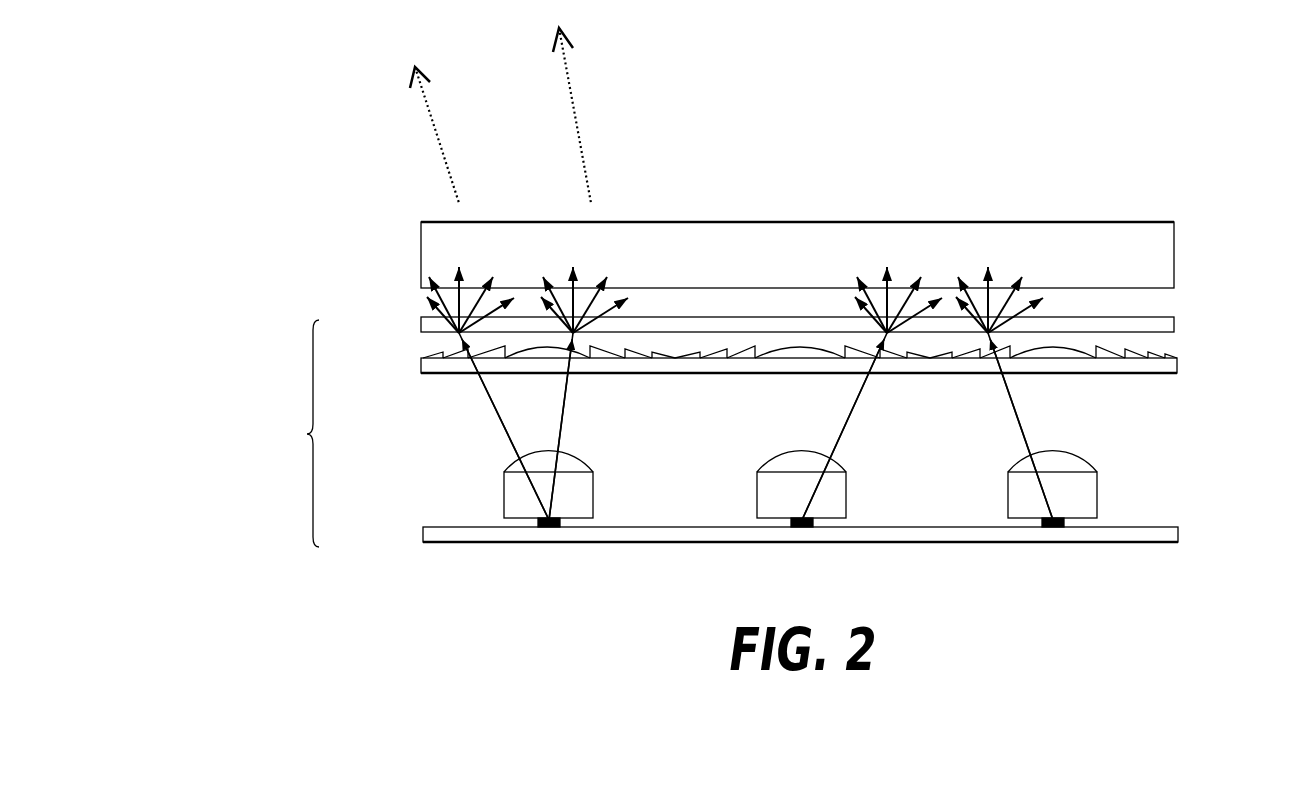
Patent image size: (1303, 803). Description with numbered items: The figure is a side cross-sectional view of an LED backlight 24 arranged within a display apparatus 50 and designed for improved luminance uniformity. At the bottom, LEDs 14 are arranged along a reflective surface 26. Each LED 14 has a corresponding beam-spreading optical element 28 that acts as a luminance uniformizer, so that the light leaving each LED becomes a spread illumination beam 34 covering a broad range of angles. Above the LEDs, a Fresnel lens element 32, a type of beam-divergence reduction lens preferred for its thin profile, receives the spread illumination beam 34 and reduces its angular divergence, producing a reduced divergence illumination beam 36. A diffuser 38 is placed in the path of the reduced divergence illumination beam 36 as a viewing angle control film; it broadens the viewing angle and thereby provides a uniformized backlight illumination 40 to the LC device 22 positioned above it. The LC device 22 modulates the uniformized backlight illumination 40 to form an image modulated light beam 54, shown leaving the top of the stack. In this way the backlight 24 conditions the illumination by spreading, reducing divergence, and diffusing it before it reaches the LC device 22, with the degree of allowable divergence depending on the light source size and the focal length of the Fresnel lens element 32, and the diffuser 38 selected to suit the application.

The display apparatus 50 is at (203, 121).
The image modulated light beam 54 is at (577, 127).
The LC device 22 is at (1123, 222).
The uniformized backlight illumination 40 is at (428, 309).
The diffuser 38 is at (1174, 318).
The reduced divergence illumination beam 36 is at (446, 342).
The Fresnel lens element 32 is at (798, 353).
The spread illumination beam 34 is at (568, 395).
The backlight 24 is at (293, 433).
The beam-spreading optical element 28 is at (593, 486).
The LED 14 is at (549, 527).
The reflective surface 26 is at (1163, 527).